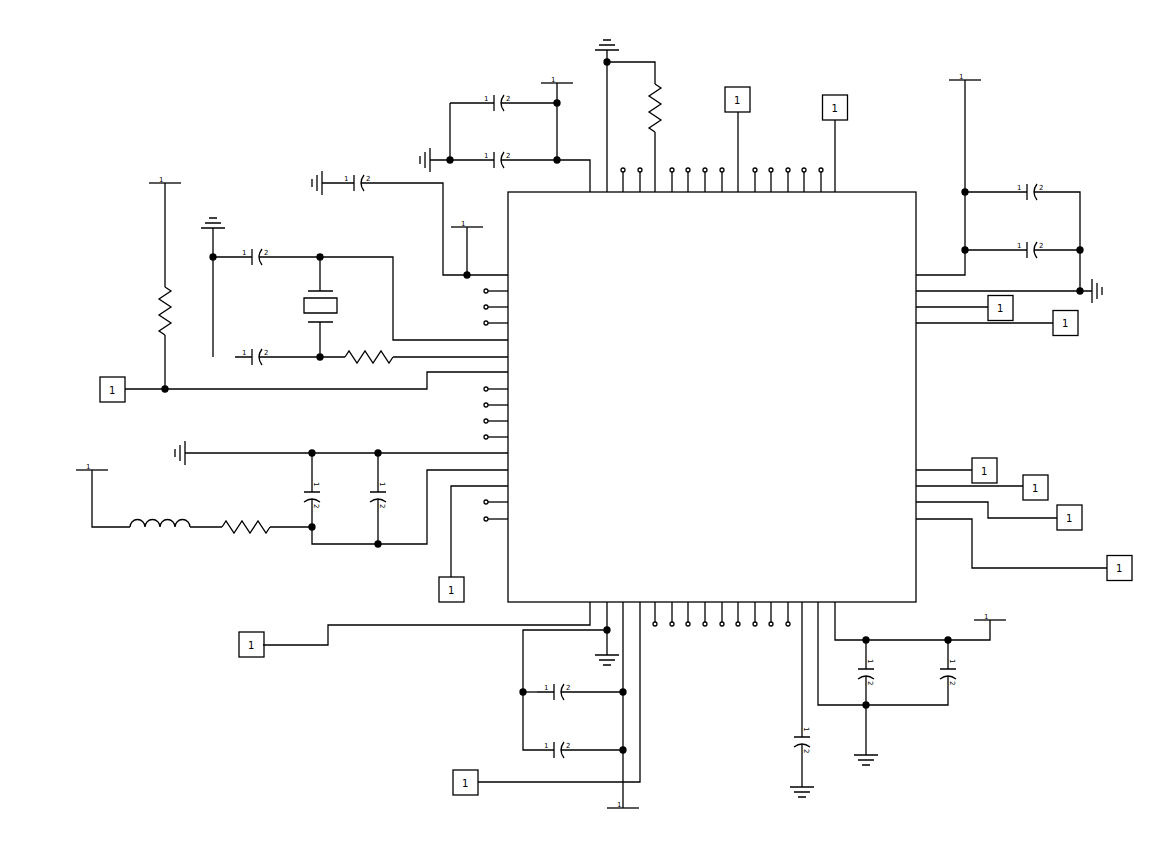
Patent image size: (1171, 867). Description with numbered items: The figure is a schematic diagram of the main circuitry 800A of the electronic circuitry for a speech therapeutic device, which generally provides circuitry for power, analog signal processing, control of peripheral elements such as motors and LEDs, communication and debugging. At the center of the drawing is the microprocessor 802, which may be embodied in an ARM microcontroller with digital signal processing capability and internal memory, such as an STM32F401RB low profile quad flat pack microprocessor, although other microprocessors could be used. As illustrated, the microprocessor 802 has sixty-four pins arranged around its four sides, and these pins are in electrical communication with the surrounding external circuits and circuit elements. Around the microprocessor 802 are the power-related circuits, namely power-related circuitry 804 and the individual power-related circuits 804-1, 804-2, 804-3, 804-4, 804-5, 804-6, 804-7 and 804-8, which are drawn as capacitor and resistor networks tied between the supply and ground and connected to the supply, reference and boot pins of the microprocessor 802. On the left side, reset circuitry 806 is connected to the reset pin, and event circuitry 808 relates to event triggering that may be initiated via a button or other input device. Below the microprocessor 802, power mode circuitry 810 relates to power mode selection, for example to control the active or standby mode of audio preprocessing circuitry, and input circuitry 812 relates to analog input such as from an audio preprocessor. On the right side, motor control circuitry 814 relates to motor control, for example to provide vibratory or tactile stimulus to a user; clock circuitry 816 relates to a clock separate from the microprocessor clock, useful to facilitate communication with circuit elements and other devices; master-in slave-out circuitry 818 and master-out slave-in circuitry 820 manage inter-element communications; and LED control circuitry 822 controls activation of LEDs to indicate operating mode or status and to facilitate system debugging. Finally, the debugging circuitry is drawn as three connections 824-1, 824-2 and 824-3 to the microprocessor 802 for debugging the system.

The main circuitry 800A is at (1072, 66).
The microprocessor 802 is at (870, 192).
The power-related circuitry 804 is at (294, 257).
The power-related circuitry 804-1 is at (392, 183).
The power-related circuitry 804-2 is at (205, 453).
The power-related circuitry 804-3 is at (523, 665).
The power-related circuitry 804-4 is at (800, 668).
The power-related circuitry 804-5 is at (920, 706).
The power-related circuitry 804-6 is at (965, 128).
The power-related circuitry 804-7 is at (618, 62).
The power-related circuitry 804-8 is at (460, 103).
The reset circuitry 806 is at (165, 238).
The event circuitry 808 is at (452, 572).
The power mode circuitry 810 is at (390, 627).
The input circuitry 812 is at (503, 782).
The motor control circuitry 814 is at (1065, 568).
The clock circuitry 816 is at (1005, 520).
The master-in slave-out (MISO) circuitry 818 is at (1003, 486).
The master-out slave-in (MOSI) circuitry 820 is at (952, 470).
The LED control circuitry 822 is at (1040, 327).
The debugging circuitry 824-1 is at (957, 308).
The debugging circuitry 824-2 is at (835, 150).
The debugging circuitry 824-3 is at (738, 135).